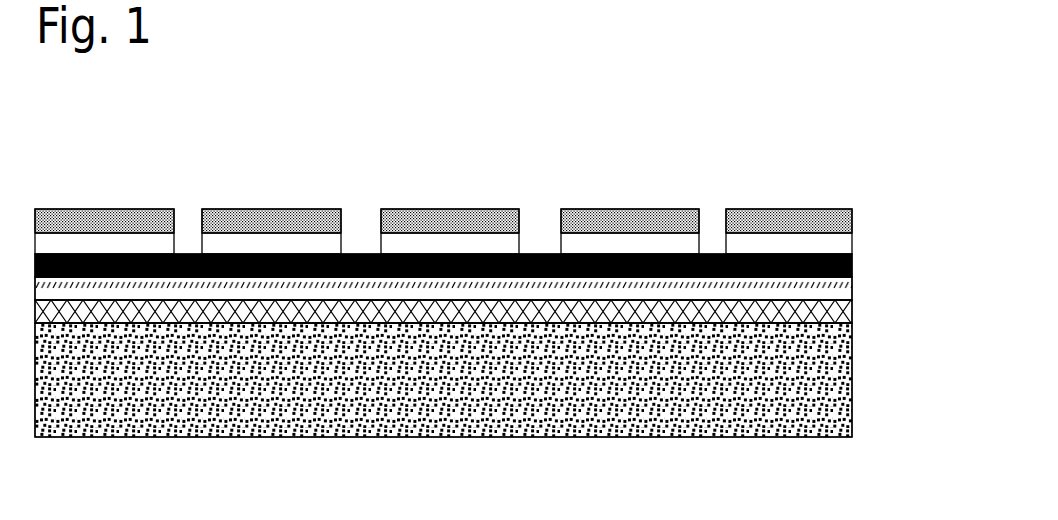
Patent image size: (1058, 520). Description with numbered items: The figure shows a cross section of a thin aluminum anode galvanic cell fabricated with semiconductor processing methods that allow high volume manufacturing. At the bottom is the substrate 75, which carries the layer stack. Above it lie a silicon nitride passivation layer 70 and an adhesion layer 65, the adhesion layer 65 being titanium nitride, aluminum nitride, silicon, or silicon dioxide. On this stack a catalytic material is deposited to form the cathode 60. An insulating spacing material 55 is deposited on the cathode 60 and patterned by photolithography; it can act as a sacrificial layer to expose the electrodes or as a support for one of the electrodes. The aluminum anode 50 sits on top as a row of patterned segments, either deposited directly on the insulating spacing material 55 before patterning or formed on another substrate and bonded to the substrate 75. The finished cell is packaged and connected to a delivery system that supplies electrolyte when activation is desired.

The aluminum anode 50 is at (411, 210).
The insulating spacing material 55 is at (717, 250).
The cathode 60 is at (860, 276).
The adhesion layer 65 is at (860, 300).
The silicon nitride passivation layer 70 is at (860, 329).
The substrate 75 is at (858, 412).